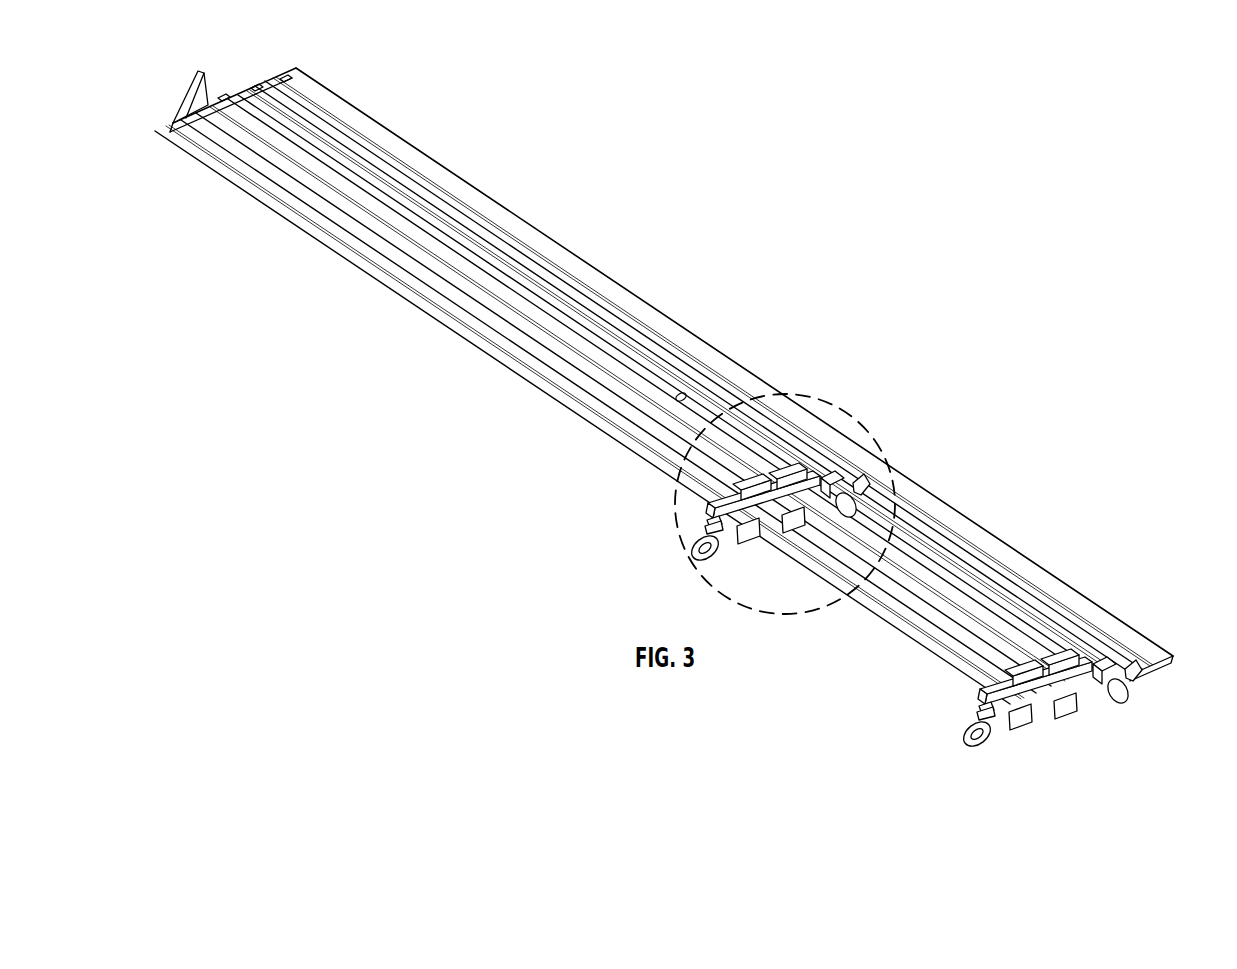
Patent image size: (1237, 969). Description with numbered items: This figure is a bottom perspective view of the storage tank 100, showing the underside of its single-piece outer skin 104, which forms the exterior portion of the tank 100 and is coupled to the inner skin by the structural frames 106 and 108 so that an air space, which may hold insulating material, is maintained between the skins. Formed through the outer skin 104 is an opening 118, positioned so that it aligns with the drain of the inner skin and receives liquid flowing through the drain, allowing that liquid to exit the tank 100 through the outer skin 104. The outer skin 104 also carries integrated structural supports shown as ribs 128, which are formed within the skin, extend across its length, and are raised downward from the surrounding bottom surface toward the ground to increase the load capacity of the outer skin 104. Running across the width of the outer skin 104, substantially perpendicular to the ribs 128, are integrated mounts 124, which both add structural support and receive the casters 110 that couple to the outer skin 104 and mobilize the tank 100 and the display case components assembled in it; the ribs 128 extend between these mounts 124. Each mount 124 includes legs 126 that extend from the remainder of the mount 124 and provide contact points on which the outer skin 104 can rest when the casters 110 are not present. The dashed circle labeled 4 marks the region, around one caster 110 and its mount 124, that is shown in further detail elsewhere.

The tank 100 is at (704, 251).
The outer skin 104 is at (615, 400).
The structural frame 106 is at (175, 128).
The structural frame 108 is at (1165, 668).
The caster 110 is at (842, 468).
The opening 118 is at (672, 394).
The mount 124 is at (271, 211).
The leg 126 is at (271, 211).
The rib 128 is at (952, 572).
The detail view circle 4 is at (786, 385).